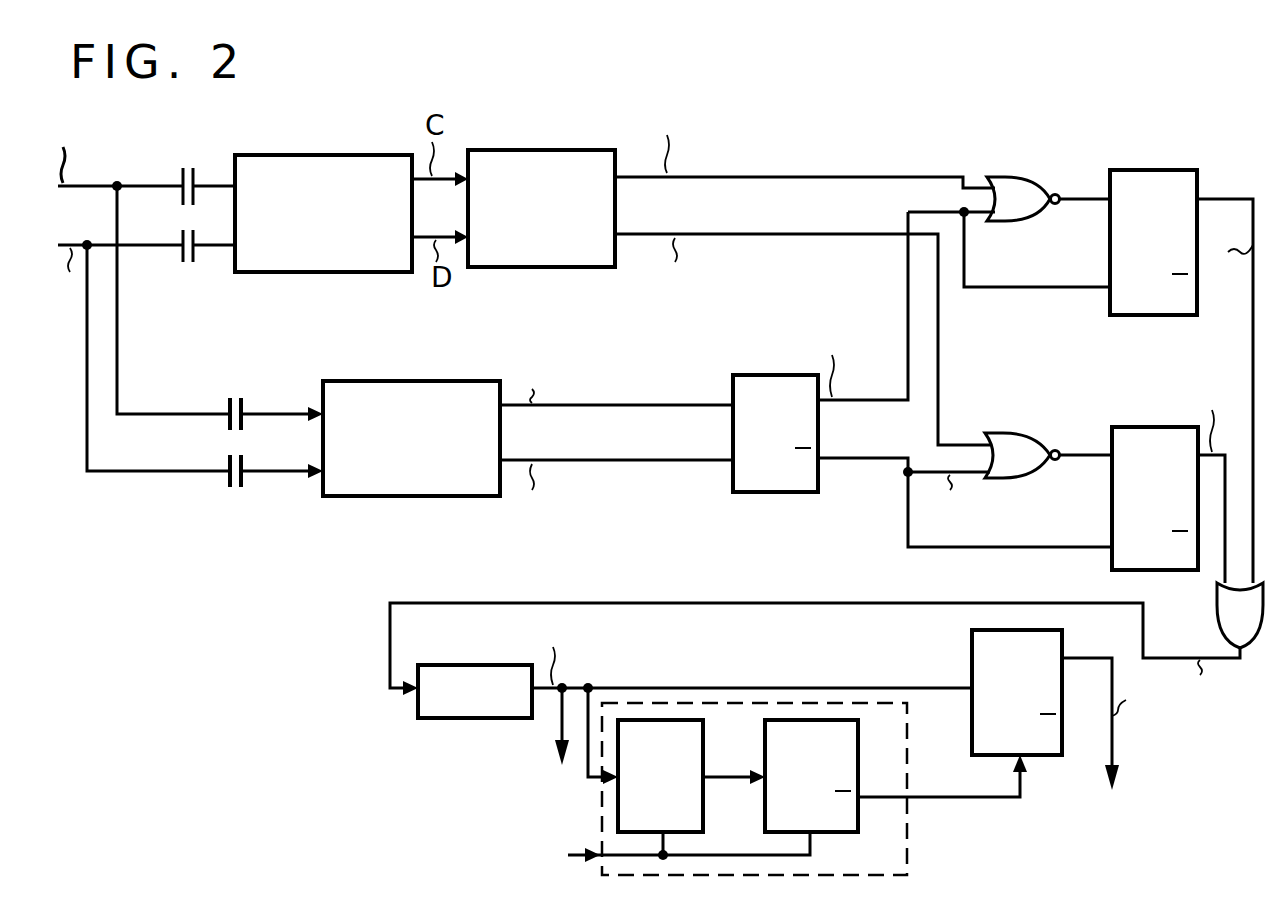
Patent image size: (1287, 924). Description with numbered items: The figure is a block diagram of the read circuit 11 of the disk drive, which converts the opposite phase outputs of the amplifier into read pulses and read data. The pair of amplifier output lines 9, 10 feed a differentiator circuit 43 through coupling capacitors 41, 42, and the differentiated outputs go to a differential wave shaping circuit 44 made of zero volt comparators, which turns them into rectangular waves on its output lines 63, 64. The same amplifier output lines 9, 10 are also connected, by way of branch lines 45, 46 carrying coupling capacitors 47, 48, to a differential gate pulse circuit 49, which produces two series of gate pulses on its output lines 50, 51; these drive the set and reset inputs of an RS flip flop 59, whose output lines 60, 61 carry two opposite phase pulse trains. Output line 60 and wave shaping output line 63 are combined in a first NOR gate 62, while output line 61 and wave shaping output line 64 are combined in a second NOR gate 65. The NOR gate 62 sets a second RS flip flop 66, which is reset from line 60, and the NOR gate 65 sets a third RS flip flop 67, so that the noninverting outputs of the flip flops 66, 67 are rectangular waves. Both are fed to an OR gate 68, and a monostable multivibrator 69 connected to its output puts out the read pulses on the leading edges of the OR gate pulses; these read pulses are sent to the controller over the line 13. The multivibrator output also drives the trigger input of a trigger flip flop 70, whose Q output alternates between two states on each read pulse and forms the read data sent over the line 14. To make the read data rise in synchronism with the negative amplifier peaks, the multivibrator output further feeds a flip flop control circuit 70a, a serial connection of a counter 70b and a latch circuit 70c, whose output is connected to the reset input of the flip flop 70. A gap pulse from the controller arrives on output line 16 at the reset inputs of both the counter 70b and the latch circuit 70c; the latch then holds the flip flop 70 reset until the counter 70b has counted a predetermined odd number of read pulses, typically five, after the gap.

The output line 9 is at (103, 183).
The output line 10 is at (62, 243).
The read circuit 11 is at (1107, 104).
The line 13 is at (560, 724).
The line 14 is at (1112, 740).
The output line 16 is at (572, 852).
The coupling capacitor 41 is at (197, 170).
The coupling capacitor 42 is at (184, 252).
The differentiator circuit 43 is at (318, 156).
The differential wave shaping circuit 44 is at (545, 150).
The branch line 45 is at (155, 412).
The branch line 46 is at (158, 470).
The coupling capacitor 47 is at (245, 405).
The coupling capacitor 48 is at (245, 483).
The differential gate pulse circuit 49 is at (422, 381).
The output line 50 is at (605, 403).
The output line 51 is at (608, 464).
The RS flip flop 59 is at (770, 374).
The output line 60 is at (882, 397).
The output line 61 is at (858, 462).
The NOR gate 62 is at (1025, 225).
The output line 63 is at (752, 173).
The output line 64 is at (762, 238).
The NOR gate 65 is at (1025, 478).
The RS flip flop 66 is at (1148, 170).
The RS flip flop 67 is at (1148, 427).
The OR gate 68 is at (1221, 618).
The monostable multivibrator 69 is at (478, 665).
The trigger flip flop 70 is at (972, 646).
The flip flop control circuit 70a is at (793, 781).
The counter 70b is at (707, 765).
The latch circuit 70c is at (860, 765).